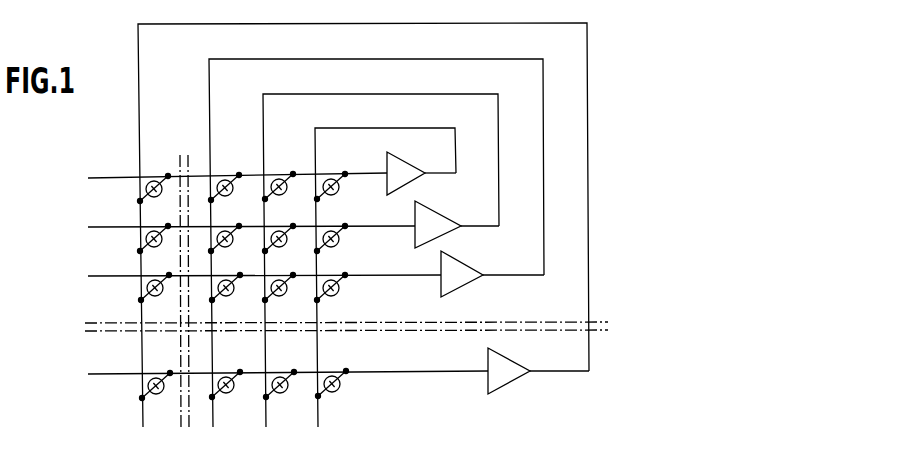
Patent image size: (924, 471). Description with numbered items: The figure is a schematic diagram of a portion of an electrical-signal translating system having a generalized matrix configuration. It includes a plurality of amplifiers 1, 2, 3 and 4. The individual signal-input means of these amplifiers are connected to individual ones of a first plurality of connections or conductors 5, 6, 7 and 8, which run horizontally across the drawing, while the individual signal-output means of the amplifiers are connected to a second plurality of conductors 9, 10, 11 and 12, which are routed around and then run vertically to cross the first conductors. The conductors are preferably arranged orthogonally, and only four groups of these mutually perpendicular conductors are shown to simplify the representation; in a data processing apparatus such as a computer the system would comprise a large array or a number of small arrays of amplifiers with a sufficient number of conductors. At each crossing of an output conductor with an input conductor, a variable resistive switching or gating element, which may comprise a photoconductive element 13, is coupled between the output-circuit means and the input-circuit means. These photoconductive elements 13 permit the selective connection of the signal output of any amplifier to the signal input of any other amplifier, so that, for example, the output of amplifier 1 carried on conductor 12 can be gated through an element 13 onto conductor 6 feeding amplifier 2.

The amplifier 1 is at (421, 173).
The amplifier 2 is at (457, 224).
The amplifier 3 is at (492, 274).
The amplifier 4 is at (538, 371).
The conductor 5 is at (116, 176).
The conductor 6 is at (116, 225).
The conductor 7 is at (116, 274).
The conductor 8 is at (116, 372).
The conductor 9 is at (134, 102).
The conductor 10 is at (210, 112).
The conductor 11 is at (264, 118).
The conductor 12 is at (316, 138).
The photoconductive element 13 is at (252, 293).